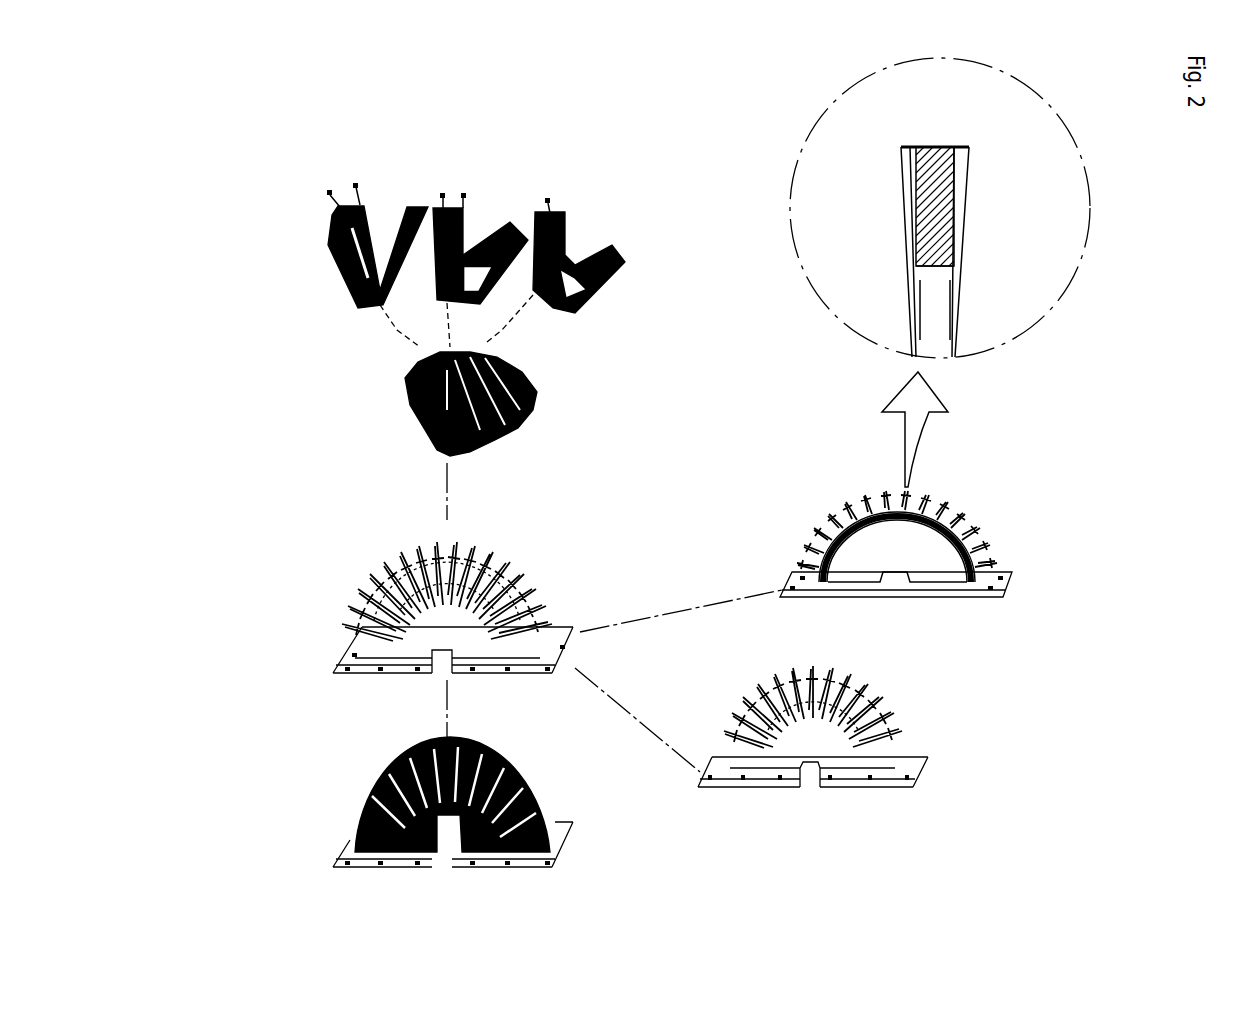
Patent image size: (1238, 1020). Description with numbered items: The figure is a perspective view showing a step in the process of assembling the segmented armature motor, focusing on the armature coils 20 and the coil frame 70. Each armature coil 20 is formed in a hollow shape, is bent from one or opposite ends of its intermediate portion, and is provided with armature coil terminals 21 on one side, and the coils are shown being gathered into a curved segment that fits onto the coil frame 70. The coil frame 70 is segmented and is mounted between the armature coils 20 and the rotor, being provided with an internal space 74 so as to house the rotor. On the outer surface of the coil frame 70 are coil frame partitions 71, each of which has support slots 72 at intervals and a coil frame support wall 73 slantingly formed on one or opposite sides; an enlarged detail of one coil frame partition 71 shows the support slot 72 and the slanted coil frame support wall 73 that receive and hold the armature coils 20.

The armature coil 20 is at (533, 383).
The armature coil terminal 21 is at (334, 197).
The coil frame 70 is at (372, 600).
The coil frame partition 71 is at (945, 207).
The support slot 72 is at (933, 297).
The coil frame support wall 73 is at (960, 253).
The internal space 74 is at (980, 612).